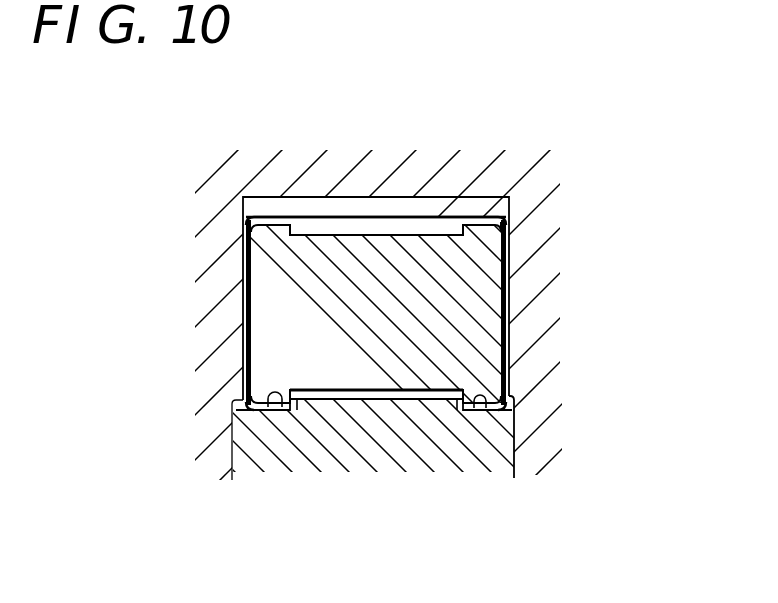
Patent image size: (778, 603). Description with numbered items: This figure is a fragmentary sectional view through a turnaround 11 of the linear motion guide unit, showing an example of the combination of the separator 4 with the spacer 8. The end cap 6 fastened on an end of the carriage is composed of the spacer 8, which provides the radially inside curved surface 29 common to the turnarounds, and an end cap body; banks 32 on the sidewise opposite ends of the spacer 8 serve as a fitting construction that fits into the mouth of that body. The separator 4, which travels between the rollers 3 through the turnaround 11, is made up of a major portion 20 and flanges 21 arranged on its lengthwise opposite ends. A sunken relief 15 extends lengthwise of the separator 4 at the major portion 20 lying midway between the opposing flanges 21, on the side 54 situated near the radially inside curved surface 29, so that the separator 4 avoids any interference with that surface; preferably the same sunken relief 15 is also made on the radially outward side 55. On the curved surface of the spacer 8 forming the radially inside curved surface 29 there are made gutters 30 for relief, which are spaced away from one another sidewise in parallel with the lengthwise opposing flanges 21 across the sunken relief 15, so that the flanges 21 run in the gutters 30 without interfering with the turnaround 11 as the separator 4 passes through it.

The roller 3 is at (475, 225).
The separator 4 is at (428, 316).
The end cap 6 is at (516, 270).
The spacer 8 is at (412, 440).
The turnaround 11 is at (302, 207).
The sunken relief 15 is at (378, 224).
The major portion 20 is at (333, 238).
The flange 21 is at (262, 228).
The radially inside curved surface 29 is at (360, 385).
The gutter for relief 30 is at (276, 410).
The bank 32 is at (514, 432).
The side 54 is at (316, 400).
The radially outward side 55 is at (417, 226).